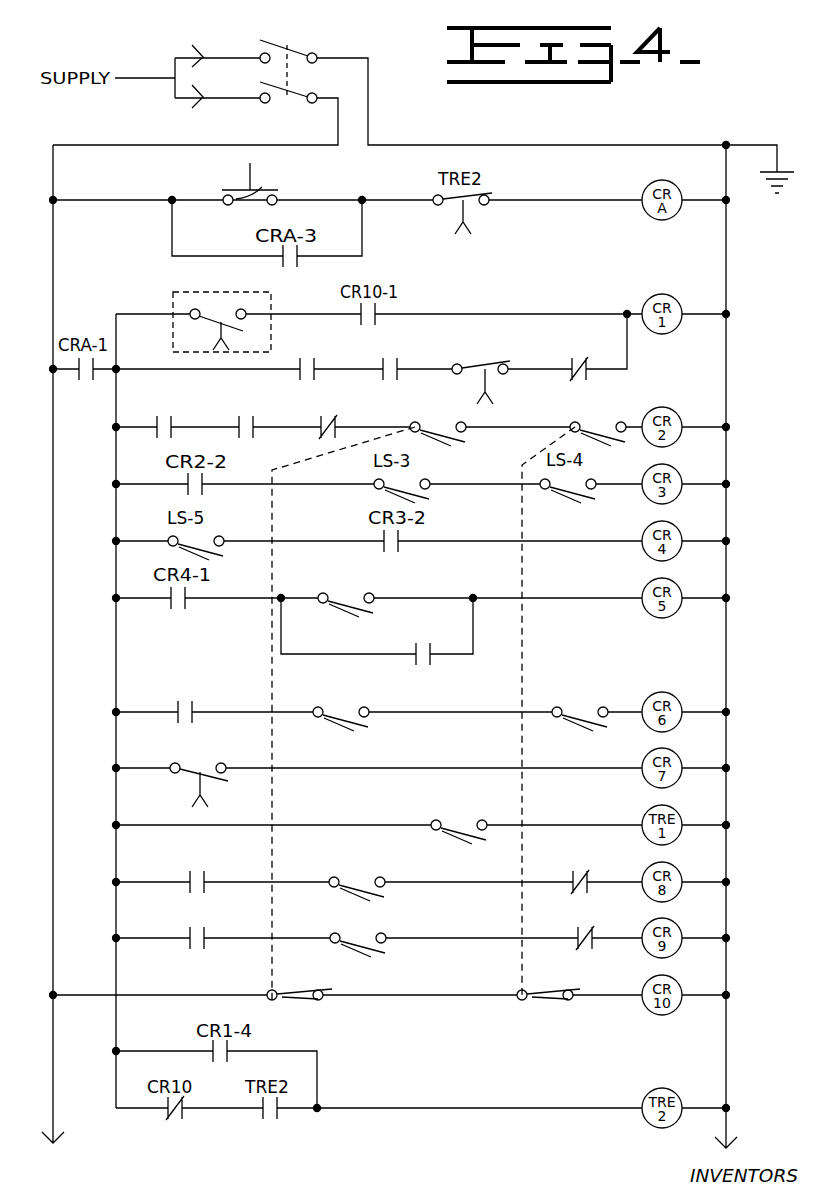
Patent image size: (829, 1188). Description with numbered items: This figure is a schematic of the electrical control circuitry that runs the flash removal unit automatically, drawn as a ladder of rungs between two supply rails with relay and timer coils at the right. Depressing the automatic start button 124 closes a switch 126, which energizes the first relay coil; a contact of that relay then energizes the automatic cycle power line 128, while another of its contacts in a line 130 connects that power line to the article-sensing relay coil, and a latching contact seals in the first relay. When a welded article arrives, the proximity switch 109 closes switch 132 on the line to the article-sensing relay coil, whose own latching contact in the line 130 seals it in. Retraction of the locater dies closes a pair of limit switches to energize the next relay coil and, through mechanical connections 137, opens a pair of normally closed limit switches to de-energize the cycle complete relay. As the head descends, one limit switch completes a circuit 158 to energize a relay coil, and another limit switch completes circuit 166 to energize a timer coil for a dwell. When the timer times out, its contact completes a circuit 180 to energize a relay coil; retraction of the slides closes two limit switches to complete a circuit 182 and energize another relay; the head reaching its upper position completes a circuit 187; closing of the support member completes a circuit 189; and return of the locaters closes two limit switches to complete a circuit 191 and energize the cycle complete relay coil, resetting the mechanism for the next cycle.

The proximity switch 109 is at (180, 292).
The automatic start button 124 is at (233, 166).
The switch 126 is at (238, 208).
The automatic cycle power line 128 is at (116, 404).
The line 130 is at (176, 368).
The switch 132 is at (228, 310).
The mechanical connections 137 is at (272, 622).
The circuit 158 is at (427, 570).
The circuit 166 is at (377, 823).
The circuit 180 is at (466, 768).
The circuit 182 is at (414, 711).
The circuit 187 is at (484, 881).
The circuit 189 is at (486, 937).
The circuit 191 is at (457, 1008).